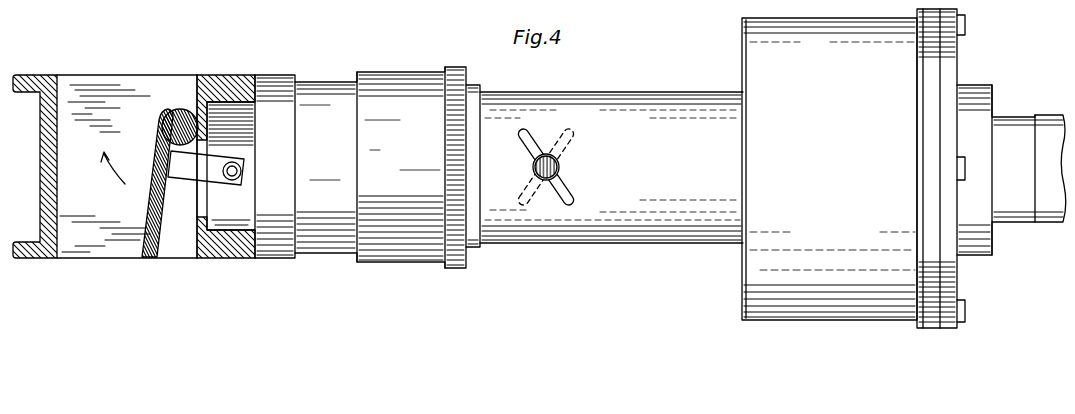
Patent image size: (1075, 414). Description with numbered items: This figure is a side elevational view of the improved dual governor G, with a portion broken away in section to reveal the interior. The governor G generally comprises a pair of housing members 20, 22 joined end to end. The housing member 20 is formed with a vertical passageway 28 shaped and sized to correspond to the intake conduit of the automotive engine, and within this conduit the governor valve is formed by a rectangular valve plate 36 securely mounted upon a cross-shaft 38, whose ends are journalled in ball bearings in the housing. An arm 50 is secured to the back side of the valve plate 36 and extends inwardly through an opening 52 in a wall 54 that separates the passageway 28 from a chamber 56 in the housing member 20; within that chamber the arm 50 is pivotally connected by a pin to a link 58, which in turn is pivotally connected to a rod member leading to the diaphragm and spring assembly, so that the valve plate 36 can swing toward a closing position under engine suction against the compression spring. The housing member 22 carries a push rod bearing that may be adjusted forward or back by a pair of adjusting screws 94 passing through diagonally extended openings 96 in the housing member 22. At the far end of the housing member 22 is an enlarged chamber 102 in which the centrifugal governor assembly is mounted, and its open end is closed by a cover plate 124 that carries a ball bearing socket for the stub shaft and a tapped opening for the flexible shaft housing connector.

The housing member 20 is at (343, 250).
The housing member 22 is at (652, 92).
The vertical passageway 28 is at (60, 92).
The valve plate 36 is at (148, 258).
The cross-shaft 38 is at (180, 108).
The arm 50 is at (214, 158).
The opening 52 is at (199, 192).
The wall 54 is at (220, 102).
The chamber 56 is at (240, 224).
The link 58 is at (241, 173).
The adjusting screws 94 is at (559, 168).
The diagonally extended openings 96 is at (530, 140).
The enlarged chamber 102 is at (808, 27).
The cover plate 124 is at (948, 52).
The governor G is at (565, 256).